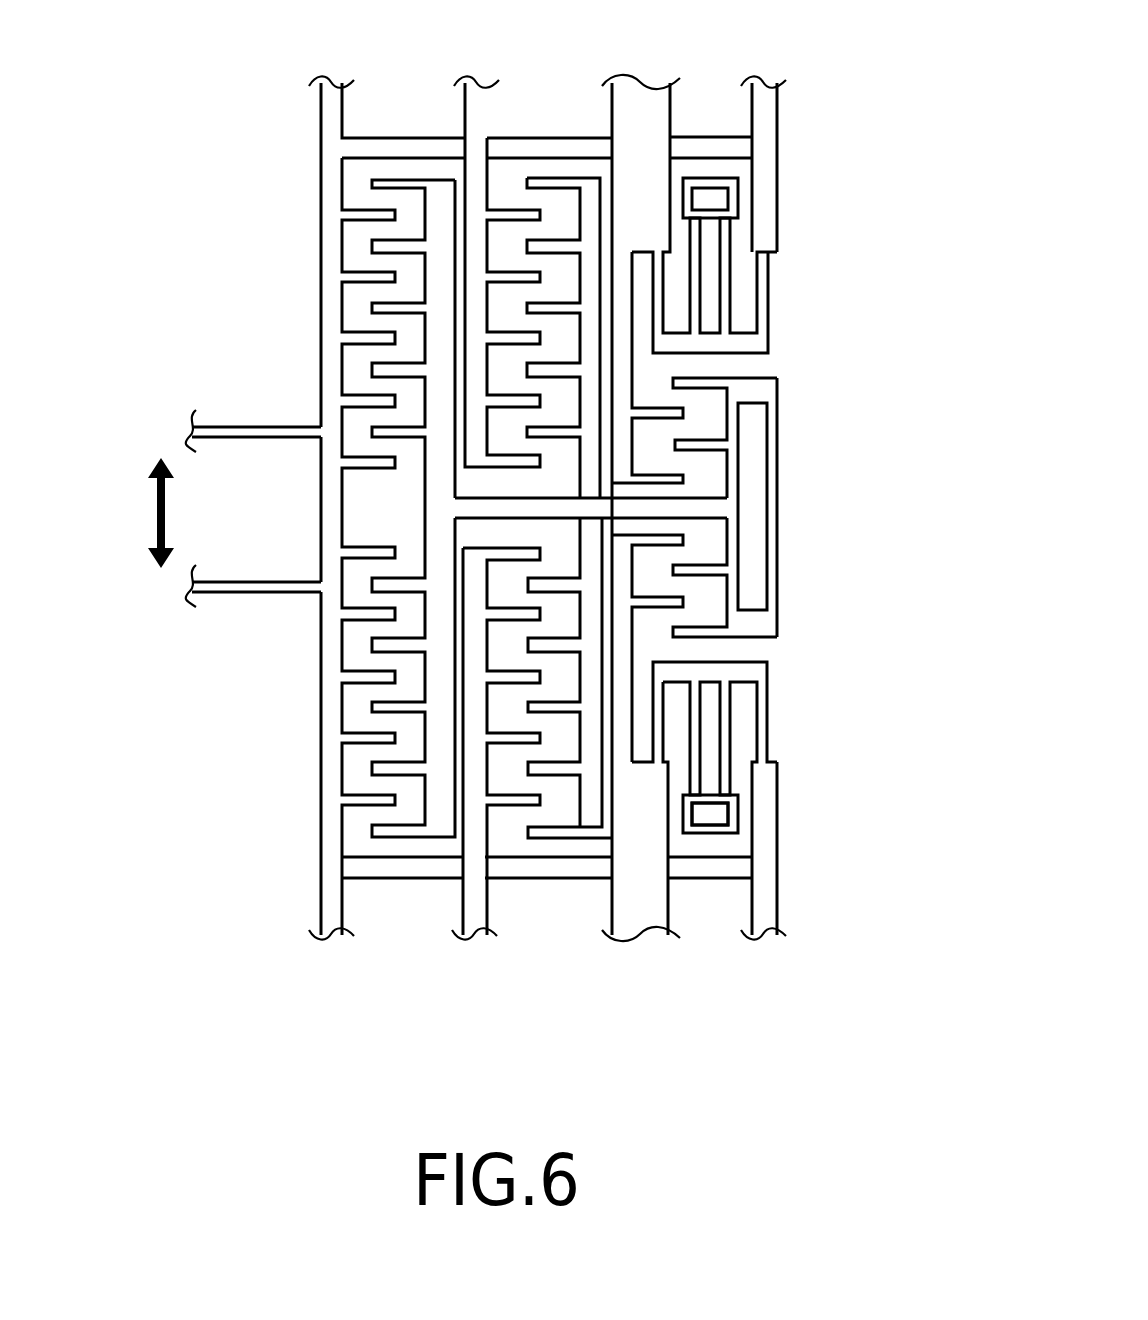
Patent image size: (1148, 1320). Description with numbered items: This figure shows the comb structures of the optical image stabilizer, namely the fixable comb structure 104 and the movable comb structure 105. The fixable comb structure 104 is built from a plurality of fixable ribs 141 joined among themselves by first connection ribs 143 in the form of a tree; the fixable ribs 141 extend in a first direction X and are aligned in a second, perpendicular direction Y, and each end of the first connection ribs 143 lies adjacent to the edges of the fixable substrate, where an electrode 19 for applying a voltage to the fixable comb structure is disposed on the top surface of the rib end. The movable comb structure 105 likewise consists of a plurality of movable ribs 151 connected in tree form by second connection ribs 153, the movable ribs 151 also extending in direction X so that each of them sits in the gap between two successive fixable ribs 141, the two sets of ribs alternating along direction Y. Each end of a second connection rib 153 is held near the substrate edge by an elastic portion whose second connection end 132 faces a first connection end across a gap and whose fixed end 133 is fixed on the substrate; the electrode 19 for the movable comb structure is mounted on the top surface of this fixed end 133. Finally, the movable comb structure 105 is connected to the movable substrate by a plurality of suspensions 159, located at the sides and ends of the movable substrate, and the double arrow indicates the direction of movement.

The electrode 19 is at (752, 440).
The fixable comb structure 104 is at (592, 505).
The movable comb structure 105 is at (476, 850).
The second connection end 132 is at (713, 663).
The fixed end 133 is at (717, 835).
The fixable ribs 141 is at (553, 178).
The first connection ribs 143 is at (512, 505).
The movable ribs 151 is at (673, 540).
The second connection ribs 153 is at (406, 150).
The suspensions 159 is at (243, 427).